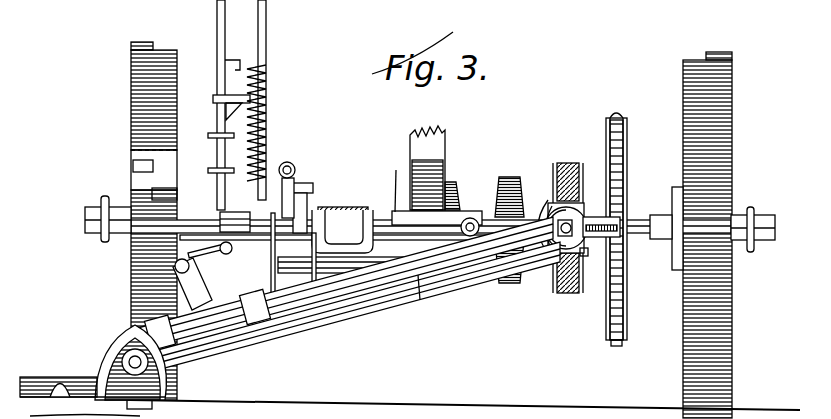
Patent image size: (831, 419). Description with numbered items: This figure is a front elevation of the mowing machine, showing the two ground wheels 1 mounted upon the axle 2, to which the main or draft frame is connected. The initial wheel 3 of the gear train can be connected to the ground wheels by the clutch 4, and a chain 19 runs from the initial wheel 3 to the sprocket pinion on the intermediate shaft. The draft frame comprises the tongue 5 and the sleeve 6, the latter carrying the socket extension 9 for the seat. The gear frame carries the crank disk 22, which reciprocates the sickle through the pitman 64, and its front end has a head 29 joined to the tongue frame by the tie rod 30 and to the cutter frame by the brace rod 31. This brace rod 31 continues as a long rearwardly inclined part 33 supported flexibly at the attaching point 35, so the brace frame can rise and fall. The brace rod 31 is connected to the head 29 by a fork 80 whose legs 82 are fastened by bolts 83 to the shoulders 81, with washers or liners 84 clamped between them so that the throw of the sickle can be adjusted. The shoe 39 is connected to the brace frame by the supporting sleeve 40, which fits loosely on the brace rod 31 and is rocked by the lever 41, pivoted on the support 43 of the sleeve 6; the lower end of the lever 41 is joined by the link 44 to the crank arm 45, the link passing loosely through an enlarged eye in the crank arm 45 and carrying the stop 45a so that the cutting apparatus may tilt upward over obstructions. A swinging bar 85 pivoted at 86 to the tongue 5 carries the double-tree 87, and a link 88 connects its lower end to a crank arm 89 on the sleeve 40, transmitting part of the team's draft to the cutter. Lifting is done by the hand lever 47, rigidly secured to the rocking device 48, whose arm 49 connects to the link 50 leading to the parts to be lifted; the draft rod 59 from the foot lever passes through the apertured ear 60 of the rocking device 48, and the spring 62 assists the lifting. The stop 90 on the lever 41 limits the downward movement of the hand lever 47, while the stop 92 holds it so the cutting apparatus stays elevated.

The ground wheel 1 is at (131, 150).
The axle 2 is at (85, 220).
The initial wheel 3 is at (620, 336).
The clutch 4 is at (674, 206).
The tongue 5 is at (358, 208).
The sleeve 6 is at (468, 213).
The socket extension 9 is at (446, 200).
The chain 19 is at (606, 313).
The crank disk 22 is at (506, 176).
The head 29 is at (601, 224).
The tie rod 30 is at (394, 179).
The brace rod 31 is at (462, 262).
The rearwardly inclined part 33 is at (393, 310).
The attaching point 35 is at (542, 268).
The shoe 39 is at (101, 398).
The supporting sleeve 40 is at (204, 318).
The lever 41 is at (217, 19).
The support 43 is at (232, 162).
The link 44 is at (131, 262).
The crank arm 45 is at (131, 297).
The stop or abutment device 45a is at (131, 280).
The hand lever 47 is at (268, 98).
The rocking device 48 is at (300, 180).
The arm 49 is at (222, 202).
The link 50 is at (275, 260).
The draft rod 59 is at (290, 175).
The ear 60 is at (283, 165).
The spring 62 is at (268, 62).
The pitman 64 is at (437, 245).
The fork 80 is at (556, 203).
The shoulders 81 is at (580, 208).
The legs 82 is at (551, 200).
The bolts 83 is at (587, 253).
The washers or liners 84 is at (566, 200).
The swinging bar or plate 85 is at (378, 308).
The pivot 86 is at (306, 200).
The double-tree 87 is at (420, 300).
The link 88 is at (293, 318).
The crank arm 89 is at (258, 343).
The stop 90 is at (240, 100).
The stop 92 is at (232, 60).